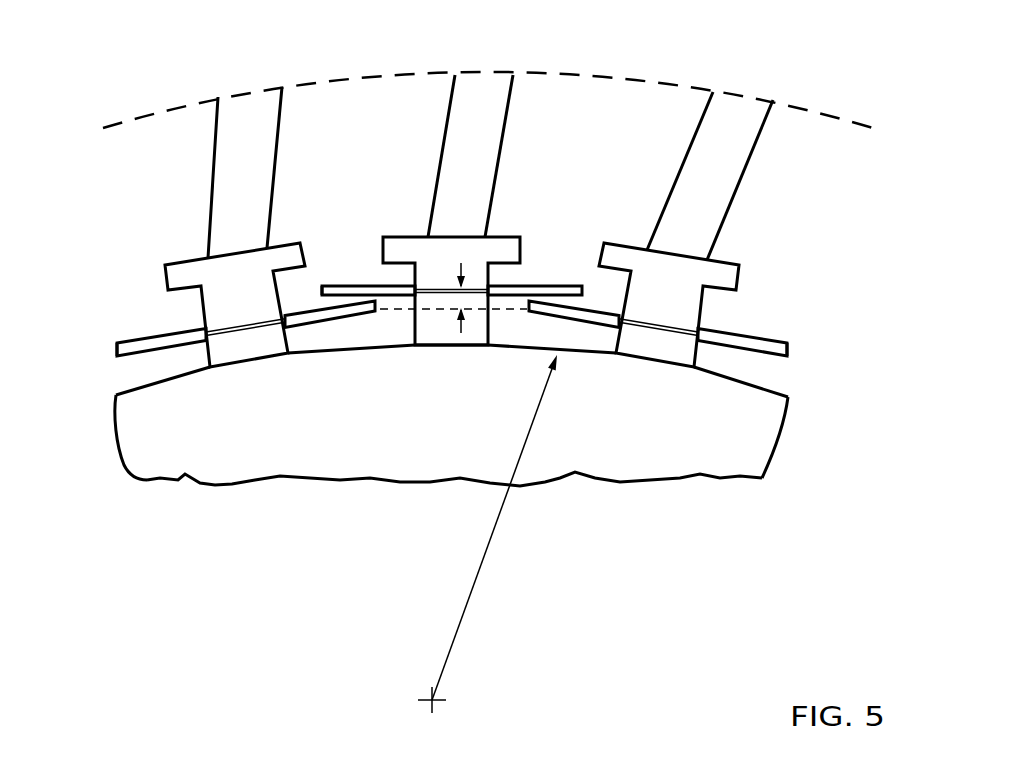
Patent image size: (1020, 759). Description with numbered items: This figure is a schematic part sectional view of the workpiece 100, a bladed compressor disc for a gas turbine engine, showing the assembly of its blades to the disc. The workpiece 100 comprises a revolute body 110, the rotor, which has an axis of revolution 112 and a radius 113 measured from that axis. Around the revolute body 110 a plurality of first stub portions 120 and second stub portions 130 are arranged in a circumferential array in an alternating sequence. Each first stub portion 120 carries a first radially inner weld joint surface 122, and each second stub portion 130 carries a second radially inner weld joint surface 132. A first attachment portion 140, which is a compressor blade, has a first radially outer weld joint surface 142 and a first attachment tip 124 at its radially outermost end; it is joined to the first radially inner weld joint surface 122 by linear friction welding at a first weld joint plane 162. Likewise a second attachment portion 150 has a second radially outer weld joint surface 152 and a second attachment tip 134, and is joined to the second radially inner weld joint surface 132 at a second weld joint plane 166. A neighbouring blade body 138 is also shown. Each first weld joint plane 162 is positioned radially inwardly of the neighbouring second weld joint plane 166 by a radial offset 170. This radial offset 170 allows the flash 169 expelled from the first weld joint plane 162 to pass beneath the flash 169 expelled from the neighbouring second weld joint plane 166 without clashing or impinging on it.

The workpiece 100 is at (104, 212).
The revolute body 110 is at (143, 423).
The axis of revolution 112 is at (432, 692).
The radius 113 is at (465, 617).
The first stub portion 120 is at (231, 368).
The first radially inner weld joint surface 122 is at (280, 323).
The first attachment tip 124 is at (252, 89).
The second stub portion 130 is at (425, 336).
The second radially inner weld joint surface 132 is at (484, 296).
The second attachment tip 134 is at (481, 74).
The adjacent tooth body 138 is at (686, 89).
The first attachment portion 140 is at (205, 313).
The first radially outer weld joint surface 142 is at (240, 334).
The second attachment portion 150 is at (492, 281).
The second radially outer weld joint surface 152 is at (427, 298).
The first weld joint plane 162 is at (225, 320).
The second weld joint plane 166 is at (447, 285).
The flash 169 is at (130, 343).
The radial offset 170 is at (463, 302).